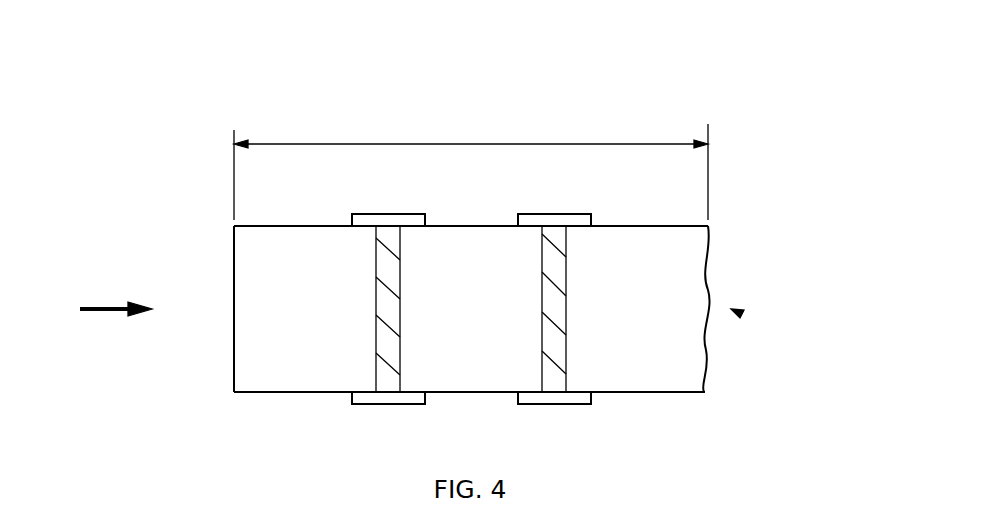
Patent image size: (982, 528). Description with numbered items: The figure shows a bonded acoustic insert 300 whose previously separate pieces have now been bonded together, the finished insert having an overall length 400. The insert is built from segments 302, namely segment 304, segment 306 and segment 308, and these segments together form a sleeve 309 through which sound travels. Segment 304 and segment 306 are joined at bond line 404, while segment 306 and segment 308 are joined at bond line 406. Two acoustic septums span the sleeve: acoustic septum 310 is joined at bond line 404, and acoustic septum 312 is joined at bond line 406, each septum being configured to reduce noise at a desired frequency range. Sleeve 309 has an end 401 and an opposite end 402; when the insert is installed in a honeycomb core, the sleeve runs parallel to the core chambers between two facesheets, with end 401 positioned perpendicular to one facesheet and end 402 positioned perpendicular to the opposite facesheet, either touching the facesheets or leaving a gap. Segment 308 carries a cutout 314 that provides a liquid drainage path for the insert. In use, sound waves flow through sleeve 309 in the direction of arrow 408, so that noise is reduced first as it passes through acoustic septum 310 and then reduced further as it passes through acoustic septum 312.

The acoustic insert 300 is at (378, 117).
The length 400 is at (470, 143).
The segments 302 is at (318, 418).
The segment 304 is at (305, 225).
The segment 306 is at (470, 225).
The segment 308 is at (637, 225).
The sleeve 309 is at (681, 417).
The acoustic septum 310 is at (385, 302).
The acoustic septum 312 is at (555, 307).
The end 401 is at (234, 310).
The end 402 is at (712, 270).
The bond line 404 is at (389, 404).
The bond line 406 is at (553, 404).
The arrow 408 is at (103, 306).
The cutout 314 is at (738, 312).